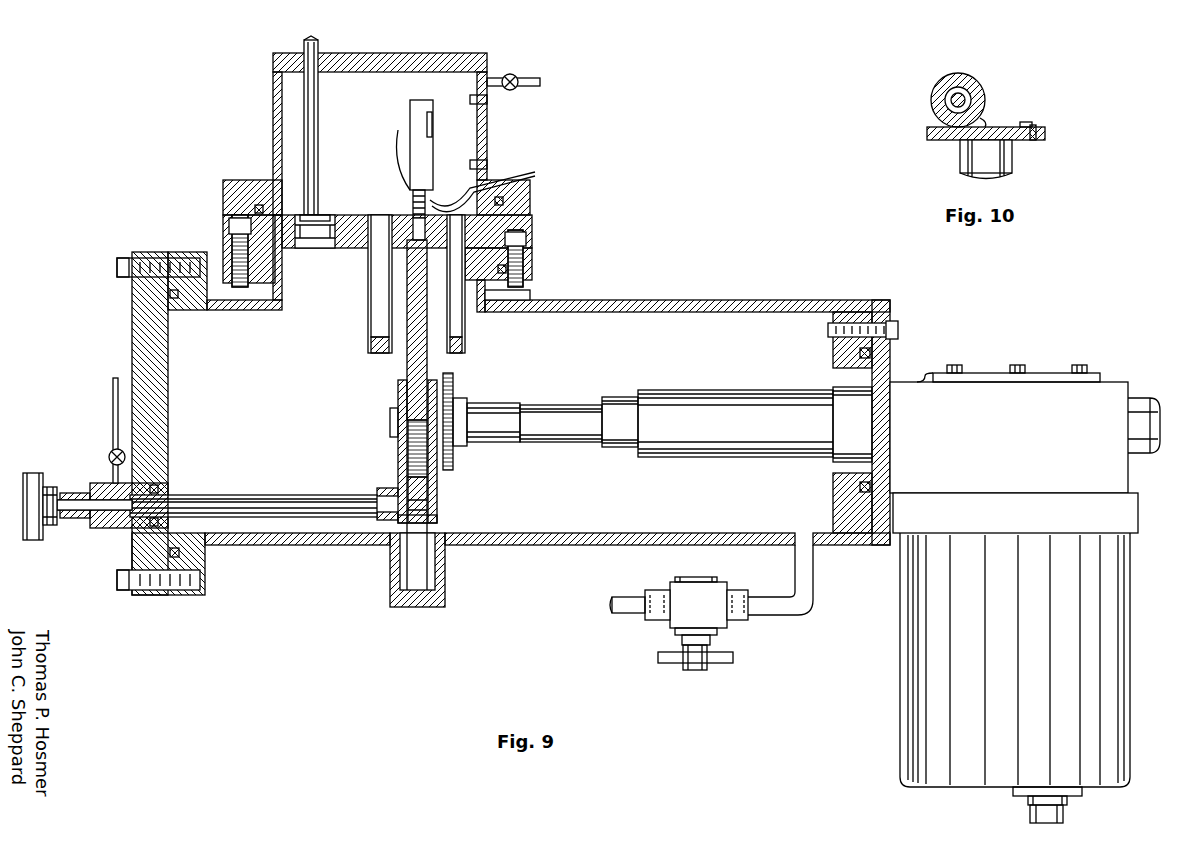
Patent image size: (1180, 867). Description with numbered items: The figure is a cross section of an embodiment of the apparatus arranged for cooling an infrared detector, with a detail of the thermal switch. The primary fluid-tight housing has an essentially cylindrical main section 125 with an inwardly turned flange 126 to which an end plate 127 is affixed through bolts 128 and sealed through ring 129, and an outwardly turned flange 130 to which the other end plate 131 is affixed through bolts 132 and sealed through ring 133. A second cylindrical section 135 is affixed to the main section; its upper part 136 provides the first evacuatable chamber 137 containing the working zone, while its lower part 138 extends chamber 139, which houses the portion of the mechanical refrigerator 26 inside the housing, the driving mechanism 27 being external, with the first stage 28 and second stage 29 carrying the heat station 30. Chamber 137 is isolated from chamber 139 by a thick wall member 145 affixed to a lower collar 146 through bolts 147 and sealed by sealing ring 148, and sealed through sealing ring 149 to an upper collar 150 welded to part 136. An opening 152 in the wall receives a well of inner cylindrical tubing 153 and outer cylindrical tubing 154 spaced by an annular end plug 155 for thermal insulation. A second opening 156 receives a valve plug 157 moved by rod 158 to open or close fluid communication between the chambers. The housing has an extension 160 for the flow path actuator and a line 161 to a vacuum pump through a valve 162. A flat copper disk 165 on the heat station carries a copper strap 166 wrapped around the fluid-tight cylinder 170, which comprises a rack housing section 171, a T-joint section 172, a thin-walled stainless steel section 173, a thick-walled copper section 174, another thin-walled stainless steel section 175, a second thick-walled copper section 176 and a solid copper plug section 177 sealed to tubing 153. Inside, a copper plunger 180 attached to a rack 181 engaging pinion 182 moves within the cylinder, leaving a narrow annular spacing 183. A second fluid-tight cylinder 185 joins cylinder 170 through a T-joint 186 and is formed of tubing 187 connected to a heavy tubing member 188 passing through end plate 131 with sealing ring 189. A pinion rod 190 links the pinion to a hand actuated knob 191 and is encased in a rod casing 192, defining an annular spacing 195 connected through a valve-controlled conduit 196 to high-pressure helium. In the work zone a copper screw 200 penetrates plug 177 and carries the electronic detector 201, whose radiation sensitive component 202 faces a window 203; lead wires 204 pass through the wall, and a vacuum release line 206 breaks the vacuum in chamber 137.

In FIG. 9, the mechanical refrigerator 26 is at (984, 658).
In FIG. 9, the driving mechanism 27 is at (1019, 609).
In FIG. 9, the first stage 28 is at (757, 431).
In FIG. 9, the second stage 29 is at (577, 431).
In FIG. 9, the first heat station 30 is at (499, 431).
In FIG. 10, the first heat station 30 is at (1012, 160).
In FIG. 9, the main section 125 is at (700, 300).
In FIG. 9, the inwardly turned flange 126 is at (833, 355).
In FIG. 9, the end plate 127 is at (885, 432).
In FIG. 9, the bolts 128 is at (900, 329).
In FIG. 9, the ring 129 is at (880, 354).
In FIG. 9, the outwardly turned flange 130 is at (192, 595).
In FIG. 9, the end plate 131 is at (155, 301).
In FIG. 9, the bolts 132 is at (117, 578).
In FIG. 9, the ring 133 is at (178, 553).
In FIG. 9, the second cylindrical section 135 is at (262, 98).
In FIG. 9, the upper part 136 is at (273, 130).
In FIG. 9, the first evacuatable chamber 137 is at (371, 104).
In FIG. 9, the lower part 138 is at (532, 294).
In FIG. 9, the chamber 139 is at (690, 364).
In FIG. 9, the wall member 145 is at (522, 235).
In FIG. 9, the lower collar 146 is at (530, 260).
In FIG. 9, the bolts 147 is at (530, 278).
In FIG. 9, the sealing ring 148 is at (262, 255).
In FIG. 9, the sealing ring 149 is at (245, 200).
In FIG. 9, the upper collar 150 is at (520, 192).
In FIG. 9, the opening 152 is at (370, 258).
In FIG. 9, the inner cylindrical tubing 153 is at (388, 330).
In FIG. 9, the outer cylindrical tubing 154 is at (465, 350).
In FIG. 9, the annular end plug 155 is at (372, 346).
In FIG. 9, the second opening 156 is at (335, 225).
In FIG. 9, the valve plug 157 is at (322, 215).
In FIG. 9, the rod 158 is at (318, 42).
In FIG. 9, the extension 160 is at (445, 603).
In FIG. 9, the line 161 is at (813, 574).
In FIG. 9, the valve 162 is at (700, 615).
In FIG. 9, the flat copper disk 165 is at (453, 390).
In FIG. 10, the flat copper disk 165 is at (1045, 133).
In FIG. 9, the copper strap 166 is at (390, 425).
In FIG. 10, the copper strap 166 is at (1002, 127).
In FIG. 9, the fluid-tight cylinder 170 is at (412, 385).
In FIG. 9, the rack housing section 171 is at (437, 570).
In FIG. 9, the T-joint section 172 is at (437, 520).
In FIG. 9, the thin-walled stainless steel section 173 is at (400, 460).
In FIG. 9, the thick-walled copper section 174 is at (407, 400).
In FIG. 10, the thick-walled copper section 174 is at (978, 98).
In FIG. 9, the thin-walled stainless steel section 175 is at (380, 310).
In FIG. 9, the thick-walled copper section 176 is at (374, 280).
In FIG. 9, the solid copper plug section 177 is at (412, 200).
In FIG. 9, the copper plunger 180 is at (430, 320).
In FIG. 10, the copper plunger 180 is at (935, 85).
In FIG. 9, the rack 181 is at (428, 465).
In FIG. 9, the pinion 182 is at (437, 505).
In FIG. 9, the annular spacing 183 is at (407, 370).
In FIG. 10, the annular spacing 183 is at (938, 110).
In FIG. 9, the second fluid-tight cylinder 185 is at (293, 492).
In FIG. 9, the T-joint 186 is at (385, 490).
In FIG. 9, the tubing 187 is at (240, 495).
In FIG. 9, the heavy tubing member 188 is at (110, 478).
In FIG. 9, the sealing ring 189 is at (160, 485).
In FIG. 9, the pinion rod 190 is at (393, 520).
In FIG. 9, the hand actuated knob 191 is at (33, 473).
In FIG. 9, the rod casing 192 is at (292, 518).
In FIG. 9, the annular spacing 195 is at (335, 518).
In FIG. 9, the valve-controlled conduit 196 is at (113, 420).
In FIG. 9, the copper screw 200 is at (388, 151).
In FIG. 9, the electronic detector 201 is at (420, 112).
In FIG. 9, the radiation sensitive component 202 is at (433, 134).
In FIG. 9, the window 203 is at (490, 133).
In FIG. 9, the lead wires 204 is at (490, 180).
In FIG. 9, the vacuum release line 206 is at (530, 75).